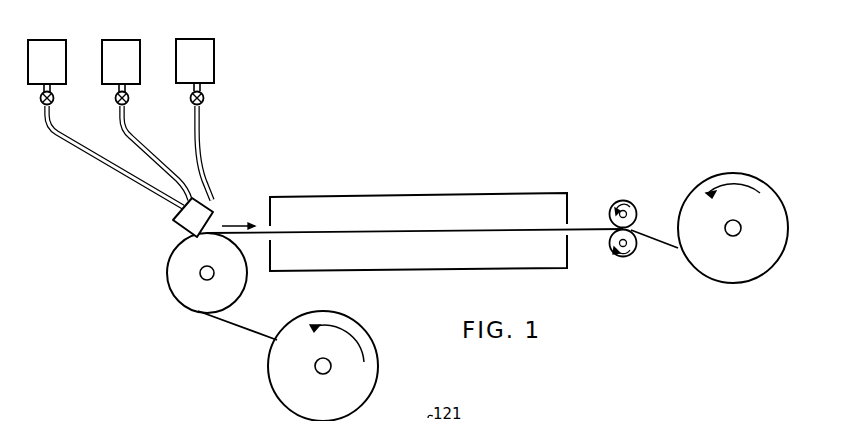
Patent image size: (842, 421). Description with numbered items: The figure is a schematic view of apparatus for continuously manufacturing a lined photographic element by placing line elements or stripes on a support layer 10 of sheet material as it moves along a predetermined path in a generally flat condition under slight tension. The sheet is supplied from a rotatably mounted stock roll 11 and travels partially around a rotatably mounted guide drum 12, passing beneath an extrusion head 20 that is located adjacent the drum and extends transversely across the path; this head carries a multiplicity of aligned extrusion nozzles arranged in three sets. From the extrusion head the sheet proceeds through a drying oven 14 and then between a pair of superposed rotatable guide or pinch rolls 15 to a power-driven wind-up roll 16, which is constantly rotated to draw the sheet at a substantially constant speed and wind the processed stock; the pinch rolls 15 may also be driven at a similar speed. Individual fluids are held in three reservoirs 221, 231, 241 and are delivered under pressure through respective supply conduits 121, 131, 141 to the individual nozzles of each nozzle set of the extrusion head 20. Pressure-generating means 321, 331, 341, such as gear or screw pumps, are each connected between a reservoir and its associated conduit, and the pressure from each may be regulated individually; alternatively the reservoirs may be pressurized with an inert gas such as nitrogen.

The support layer 10 is at (252, 327).
The stock roll 11 is at (331, 366).
The guide drum 12 is at (173, 293).
The drying oven 14 is at (391, 196).
The pinch rolls 15 is at (616, 201).
The wind-up roll 16 is at (729, 234).
The extrusion head 20 is at (208, 201).
The supply conduit 121 is at (112, 174).
The supply conduit 131 is at (148, 150).
The supply conduit 141 is at (201, 135).
The reservoir 221 is at (44, 44).
The reservoir 231 is at (117, 44).
The reservoir 241 is at (193, 43).
The pressure-generating means 321 is at (54, 101).
The pressure-generating means 331 is at (129, 100).
The pressure-generating means 341 is at (204, 98).